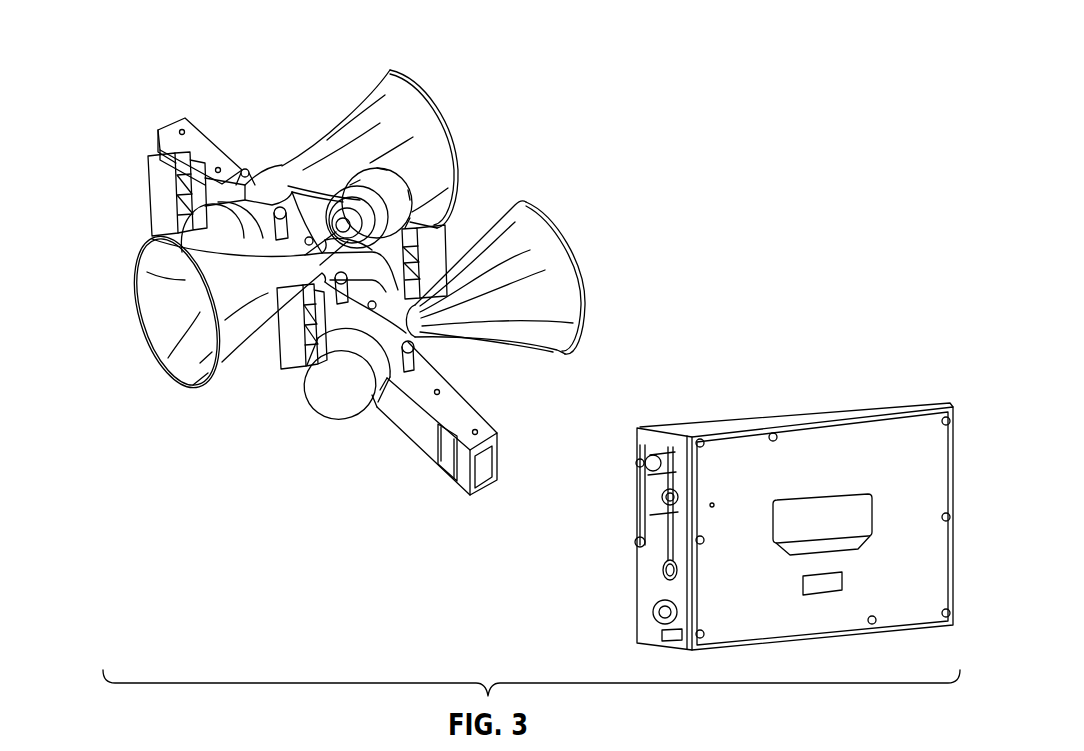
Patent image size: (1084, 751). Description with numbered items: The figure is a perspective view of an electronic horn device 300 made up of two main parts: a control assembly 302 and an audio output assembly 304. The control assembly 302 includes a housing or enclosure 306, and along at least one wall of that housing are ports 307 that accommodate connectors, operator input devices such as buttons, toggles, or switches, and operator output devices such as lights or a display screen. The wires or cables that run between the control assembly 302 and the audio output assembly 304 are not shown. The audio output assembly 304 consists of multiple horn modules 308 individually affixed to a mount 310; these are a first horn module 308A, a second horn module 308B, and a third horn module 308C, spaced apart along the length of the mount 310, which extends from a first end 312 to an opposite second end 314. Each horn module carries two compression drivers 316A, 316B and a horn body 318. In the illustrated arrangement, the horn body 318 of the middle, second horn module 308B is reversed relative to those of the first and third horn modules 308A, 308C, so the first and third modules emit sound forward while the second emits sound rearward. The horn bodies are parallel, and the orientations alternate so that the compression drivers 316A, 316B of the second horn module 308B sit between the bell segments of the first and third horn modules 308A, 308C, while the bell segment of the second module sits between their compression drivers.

The electronic horn device 300 is at (772, 143).
The control assembly 302 is at (866, 393).
The audio output assembly 304 is at (234, 49).
The housing or enclosure 306 is at (737, 456).
The ports 307 is at (641, 449).
The horn modules 308 is at (323, 103).
The first horn module 308A is at (580, 244).
The second horn module 308B is at (128, 313).
The third horn module 308C is at (443, 88).
The mount 310 is at (465, 416).
The first end 312 is at (500, 486).
The second end 314 is at (164, 118).
The compression driver 316A is at (196, 239).
The compression driver 316B is at (147, 187).
The horn body 318 is at (336, 137).